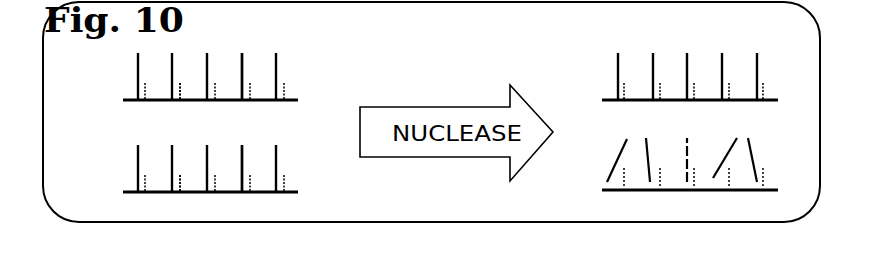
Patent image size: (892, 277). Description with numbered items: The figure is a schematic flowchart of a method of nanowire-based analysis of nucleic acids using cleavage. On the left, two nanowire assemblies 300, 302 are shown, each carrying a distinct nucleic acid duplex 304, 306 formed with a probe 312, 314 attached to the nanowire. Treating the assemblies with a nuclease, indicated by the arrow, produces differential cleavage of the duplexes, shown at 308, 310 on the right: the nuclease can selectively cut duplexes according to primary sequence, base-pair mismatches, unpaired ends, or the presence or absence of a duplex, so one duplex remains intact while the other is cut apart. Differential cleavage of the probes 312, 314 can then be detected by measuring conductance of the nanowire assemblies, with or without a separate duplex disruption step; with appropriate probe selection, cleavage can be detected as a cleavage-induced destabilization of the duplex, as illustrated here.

The nanowire assembly 300 is at (100, 76).
The nanowire assembly 302 is at (100, 162).
The nucleic acid duplex 304 is at (254, 62).
The nucleic acid duplex 306 is at (254, 155).
The differential cleavage result 308 is at (594, 68).
The differential cleavage result 310 is at (604, 152).
The probe 312 is at (181, 91).
The probe 314 is at (181, 183).